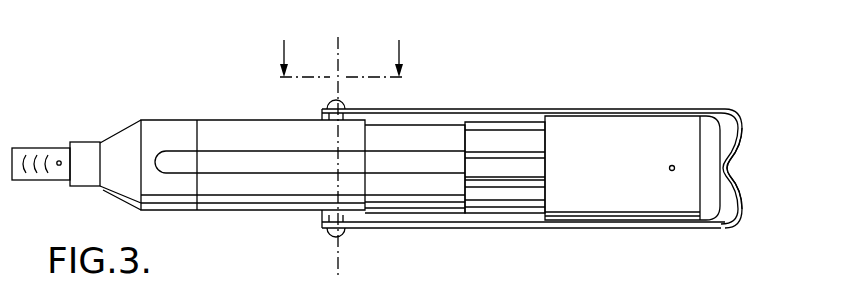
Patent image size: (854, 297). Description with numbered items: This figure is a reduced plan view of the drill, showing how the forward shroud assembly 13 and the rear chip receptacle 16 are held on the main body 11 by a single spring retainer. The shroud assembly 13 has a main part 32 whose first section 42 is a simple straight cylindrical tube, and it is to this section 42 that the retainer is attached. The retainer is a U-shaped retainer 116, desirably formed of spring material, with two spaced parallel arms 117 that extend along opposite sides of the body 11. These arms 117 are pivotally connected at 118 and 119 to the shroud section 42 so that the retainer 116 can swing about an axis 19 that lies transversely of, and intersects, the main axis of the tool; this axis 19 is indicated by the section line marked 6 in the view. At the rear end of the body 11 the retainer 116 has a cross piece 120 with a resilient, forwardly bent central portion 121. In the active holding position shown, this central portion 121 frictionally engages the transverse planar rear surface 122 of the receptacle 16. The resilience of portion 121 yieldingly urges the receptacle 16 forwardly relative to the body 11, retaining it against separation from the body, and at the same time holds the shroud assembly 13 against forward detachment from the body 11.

The shroud assembly 13 is at (403, 166).
The main part of the shroud assembly 32 is at (258, 215).
The first section 42 is at (302, 198).
The main body 11 is at (429, 200).
The U-shaped retainer 116 is at (558, 166).
The arms 117 is at (455, 108).
The pivotal connection 118 is at (346, 104).
The pivotal connection 119 is at (343, 236).
The chip receptacle 16 is at (648, 200).
The cross piece 120 is at (738, 206).
The resilient forwardly bent central portion 121 is at (729, 178).
The transverse planar rear surface 122 is at (729, 160).
The axis 19 is at (340, 52).
The section 6-6 indicator 6 is at (339, 58).